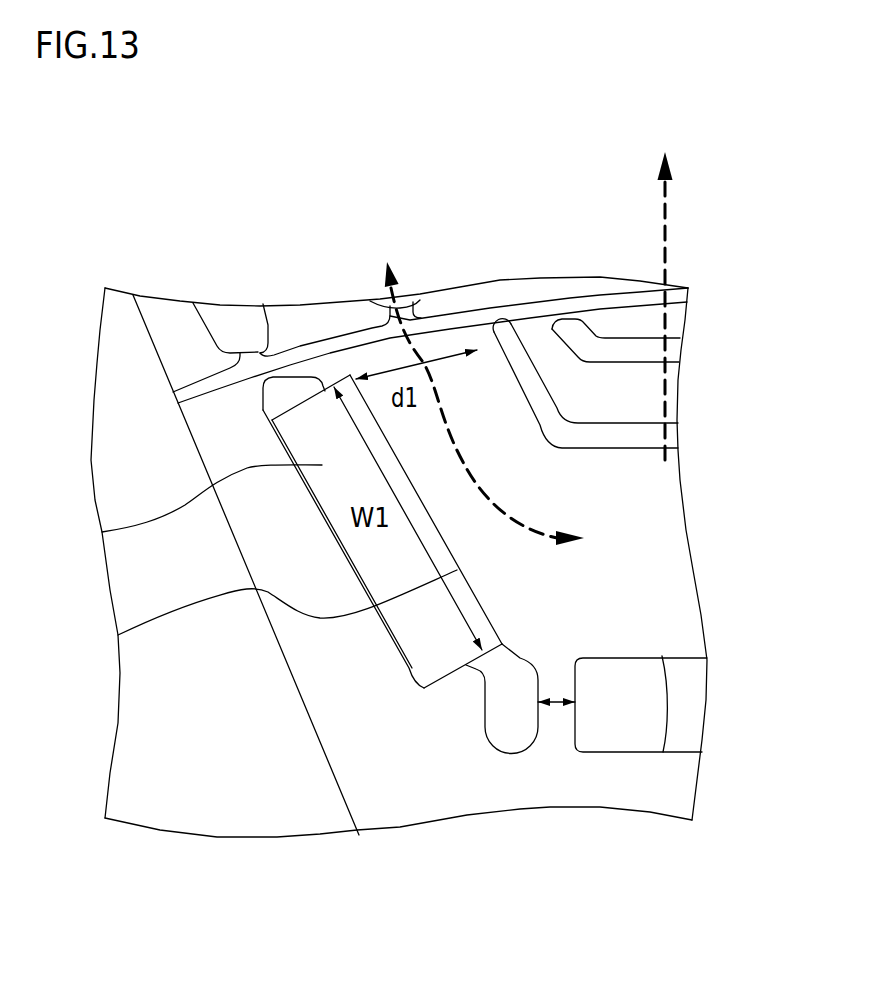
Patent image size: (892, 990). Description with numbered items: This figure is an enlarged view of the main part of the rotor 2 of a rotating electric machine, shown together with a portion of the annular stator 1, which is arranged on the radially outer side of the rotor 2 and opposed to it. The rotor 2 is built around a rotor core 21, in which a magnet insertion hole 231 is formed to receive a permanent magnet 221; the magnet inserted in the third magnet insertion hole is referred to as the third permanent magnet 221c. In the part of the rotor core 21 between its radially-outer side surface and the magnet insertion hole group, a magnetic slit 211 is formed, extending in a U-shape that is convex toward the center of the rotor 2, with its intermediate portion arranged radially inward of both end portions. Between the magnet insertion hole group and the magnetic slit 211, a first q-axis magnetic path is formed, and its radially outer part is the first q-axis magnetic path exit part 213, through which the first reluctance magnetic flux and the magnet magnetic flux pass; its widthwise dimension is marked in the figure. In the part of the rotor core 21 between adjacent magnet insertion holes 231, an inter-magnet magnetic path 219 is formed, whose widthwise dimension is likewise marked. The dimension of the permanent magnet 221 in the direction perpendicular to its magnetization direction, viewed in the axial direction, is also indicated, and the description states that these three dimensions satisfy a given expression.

The stator 1 is at (177, 327).
The rotor 2 is at (186, 423).
The rotor core 21 is at (620, 313).
The magnetic slit 211 is at (525, 372).
The first q-axis magnetic path exit part 213 is at (435, 350).
The inter-magnet magnetic path 219 is at (555, 723).
The permanent magnet 221 is at (102, 532).
The third permanent magnet 221c is at (663, 752).
The magnet insertion hole 231 is at (118, 635).